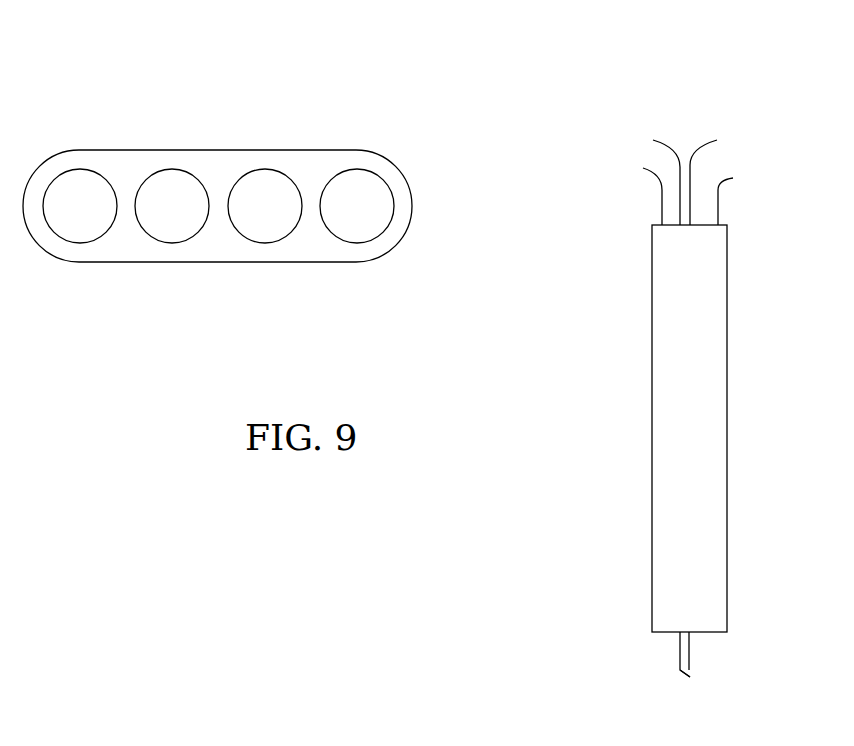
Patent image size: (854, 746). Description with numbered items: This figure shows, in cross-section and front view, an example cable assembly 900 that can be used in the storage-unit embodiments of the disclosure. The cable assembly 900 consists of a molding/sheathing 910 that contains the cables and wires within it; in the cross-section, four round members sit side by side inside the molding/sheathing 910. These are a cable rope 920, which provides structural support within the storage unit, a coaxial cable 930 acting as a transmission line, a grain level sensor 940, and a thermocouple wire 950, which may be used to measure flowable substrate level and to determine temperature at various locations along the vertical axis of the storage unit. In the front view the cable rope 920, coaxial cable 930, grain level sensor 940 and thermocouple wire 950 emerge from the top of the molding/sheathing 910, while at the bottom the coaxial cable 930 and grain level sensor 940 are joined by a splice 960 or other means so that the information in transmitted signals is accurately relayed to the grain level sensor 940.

The cable assembly 900 is at (594, 410).
The molding/sheathing 910 is at (127, 240).
The cable rope 920 is at (72, 167).
The coaxial cable 930 is at (158, 168).
The grain level sensor 940 is at (264, 168).
The thermocouple wire 950 is at (374, 170).
The splice 960 is at (690, 677).